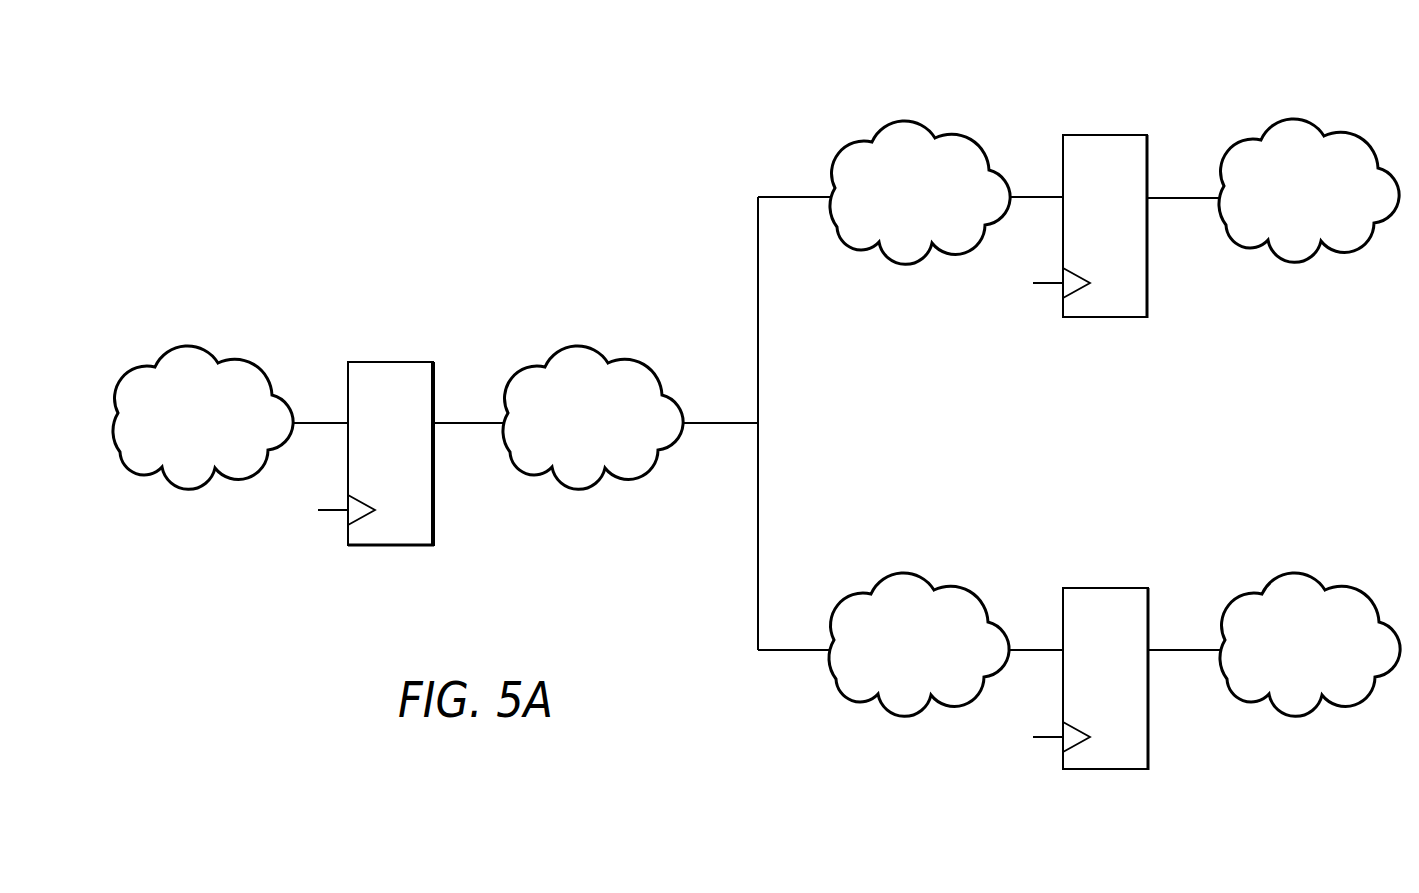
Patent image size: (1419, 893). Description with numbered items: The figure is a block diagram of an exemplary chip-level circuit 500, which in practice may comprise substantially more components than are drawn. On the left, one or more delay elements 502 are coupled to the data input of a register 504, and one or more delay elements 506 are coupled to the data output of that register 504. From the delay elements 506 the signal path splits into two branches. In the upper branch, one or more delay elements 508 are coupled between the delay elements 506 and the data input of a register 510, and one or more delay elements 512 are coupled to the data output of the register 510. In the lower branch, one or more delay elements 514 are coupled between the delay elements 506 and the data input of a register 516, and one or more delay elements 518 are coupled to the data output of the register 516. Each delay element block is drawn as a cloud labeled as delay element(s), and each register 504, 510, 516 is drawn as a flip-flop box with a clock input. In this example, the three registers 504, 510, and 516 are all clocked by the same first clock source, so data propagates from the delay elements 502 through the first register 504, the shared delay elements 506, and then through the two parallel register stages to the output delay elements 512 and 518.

The chip-level circuit 500 is at (1034, 48).
The delay elements 502 is at (190, 344).
The register 504 is at (372, 362).
The delay elements 506 is at (583, 345).
The delay elements 508 is at (910, 120).
The register 510 is at (1090, 135).
The delay elements 512 is at (1287, 118).
The delay elements 514 is at (910, 572).
The register 516 is at (1090, 588).
The delay elements 518 is at (1286, 572).